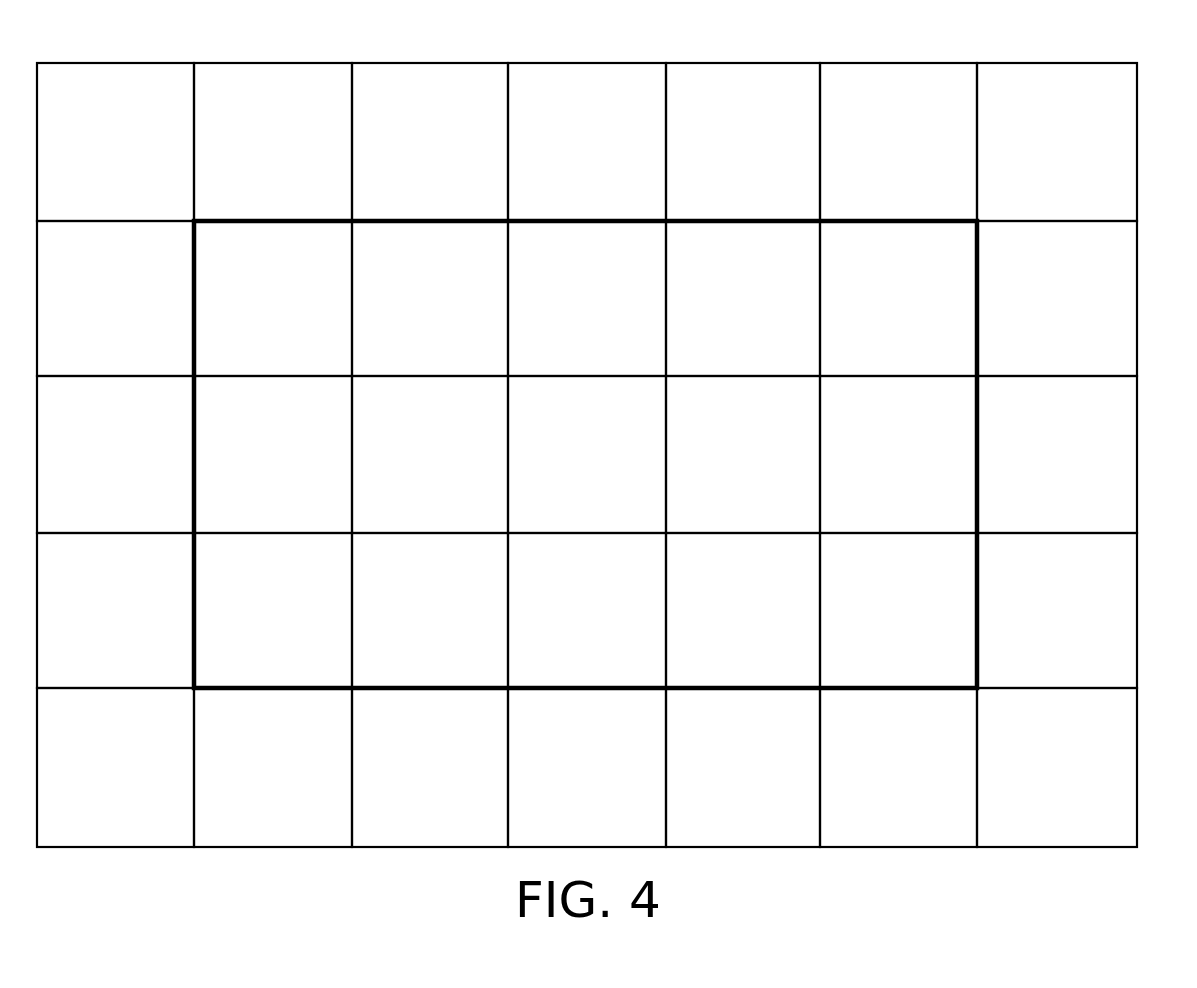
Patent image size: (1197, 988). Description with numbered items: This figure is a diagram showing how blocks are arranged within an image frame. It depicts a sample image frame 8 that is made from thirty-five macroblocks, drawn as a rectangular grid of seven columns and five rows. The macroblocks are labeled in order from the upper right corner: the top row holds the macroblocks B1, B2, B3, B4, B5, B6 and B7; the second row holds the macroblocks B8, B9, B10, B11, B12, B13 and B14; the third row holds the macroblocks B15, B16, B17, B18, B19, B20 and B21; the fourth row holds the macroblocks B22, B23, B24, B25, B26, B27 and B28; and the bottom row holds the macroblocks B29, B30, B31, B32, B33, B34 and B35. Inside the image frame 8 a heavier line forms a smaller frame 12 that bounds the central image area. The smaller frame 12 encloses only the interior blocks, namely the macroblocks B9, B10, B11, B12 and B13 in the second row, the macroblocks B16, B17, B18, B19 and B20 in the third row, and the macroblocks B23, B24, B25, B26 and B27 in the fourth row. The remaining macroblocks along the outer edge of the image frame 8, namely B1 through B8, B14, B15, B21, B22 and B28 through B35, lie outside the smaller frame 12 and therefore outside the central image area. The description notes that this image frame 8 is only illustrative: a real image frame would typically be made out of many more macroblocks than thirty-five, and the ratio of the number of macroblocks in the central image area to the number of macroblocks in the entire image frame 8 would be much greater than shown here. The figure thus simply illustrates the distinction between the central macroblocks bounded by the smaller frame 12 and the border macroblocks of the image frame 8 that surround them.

The image frame 8 is at (587, 427).
The smaller frame 12 is at (978, 293).
The macroblock B1 is at (1057, 142).
The macroblock B2 is at (898, 142).
The macroblock B3 is at (743, 142).
The macroblock B4 is at (587, 142).
The macroblock B5 is at (430, 142).
The macroblock B6 is at (273, 142).
The macroblock B7 is at (115, 142).
The macroblock B8 is at (1057, 298).
The macroblock B9 is at (898, 298).
The macroblock B10 is at (743, 298).
The macroblock B11 is at (587, 298).
The macroblock B12 is at (430, 298).
The macroblock B13 is at (273, 298).
The macroblock B14 is at (115, 298).
The macroblock B15 is at (1057, 454).
The macroblock B16 is at (898, 454).
The macroblock B17 is at (743, 454).
The macroblock B18 is at (587, 454).
The macroblock B19 is at (430, 454).
The macroblock B20 is at (273, 454).
The macroblock B21 is at (115, 454).
The macroblock B22 is at (1057, 610).
The macroblock B23 is at (898, 610).
The macroblock B24 is at (743, 610).
The macroblock B25 is at (587, 610).
The macroblock B26 is at (430, 610).
The macroblock B27 is at (273, 610).
The macroblock B28 is at (115, 610).
The macroblock B29 is at (1057, 767).
The macroblock B30 is at (898, 767).
The macroblock B31 is at (743, 767).
The macroblock B32 is at (587, 767).
The macroblock B33 is at (430, 767).
The macroblock B34 is at (273, 767).
The macroblock B35 is at (115, 767).